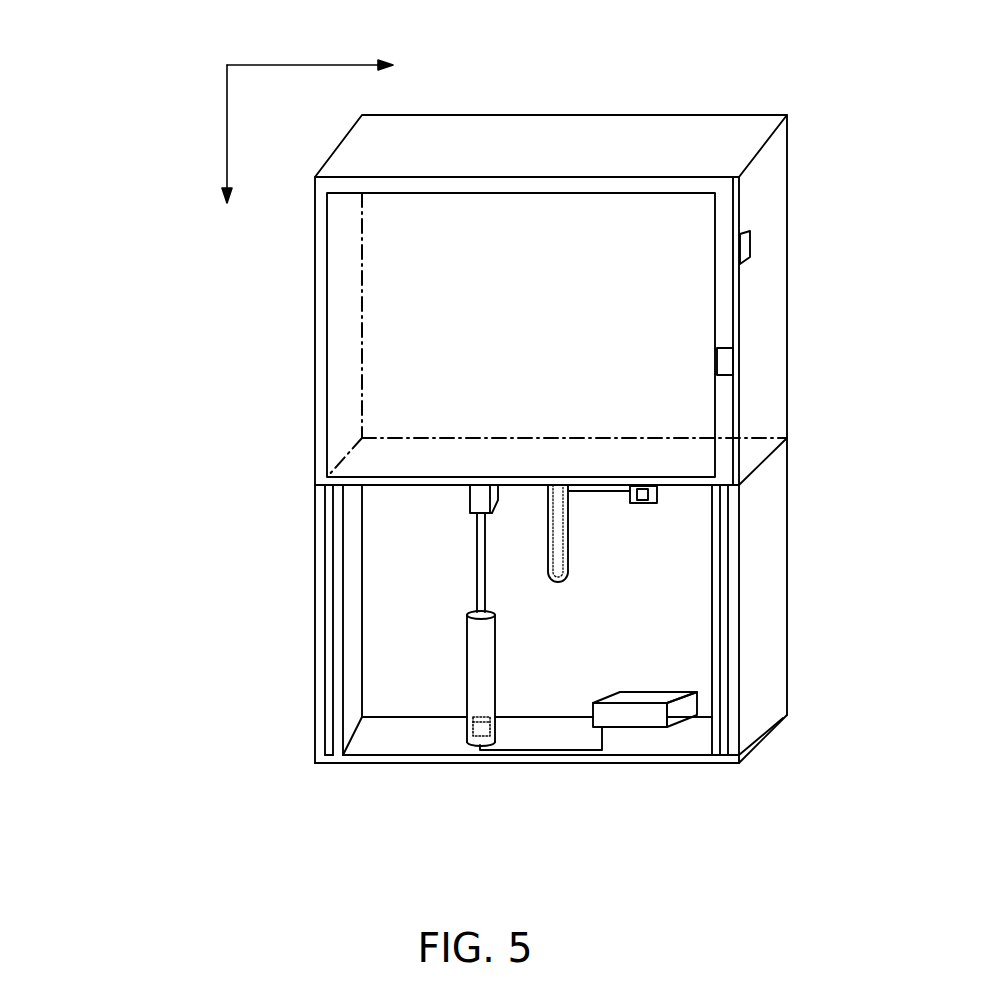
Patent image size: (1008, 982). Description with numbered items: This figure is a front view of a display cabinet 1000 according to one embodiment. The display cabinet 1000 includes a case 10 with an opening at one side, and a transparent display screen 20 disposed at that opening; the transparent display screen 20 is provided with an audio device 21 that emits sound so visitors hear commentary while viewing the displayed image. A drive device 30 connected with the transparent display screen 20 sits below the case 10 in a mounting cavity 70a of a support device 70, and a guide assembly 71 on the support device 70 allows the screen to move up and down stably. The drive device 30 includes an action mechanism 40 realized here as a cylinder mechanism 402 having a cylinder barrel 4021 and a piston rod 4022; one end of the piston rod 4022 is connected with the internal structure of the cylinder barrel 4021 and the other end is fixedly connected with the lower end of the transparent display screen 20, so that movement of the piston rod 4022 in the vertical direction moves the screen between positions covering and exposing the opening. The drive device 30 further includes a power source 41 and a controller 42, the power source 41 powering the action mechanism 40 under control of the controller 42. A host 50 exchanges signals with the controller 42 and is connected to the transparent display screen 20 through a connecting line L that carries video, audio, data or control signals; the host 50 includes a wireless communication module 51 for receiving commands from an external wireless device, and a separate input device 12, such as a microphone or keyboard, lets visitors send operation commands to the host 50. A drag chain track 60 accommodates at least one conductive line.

The display cabinet 1000 is at (130, 48).
The case 10 is at (770, 213).
The input device 12 is at (745, 250).
The transparent display screen 20 is at (740, 317).
The audio device 21 is at (725, 362).
The drive device 30 is at (95, 478).
The action mechanism 40 is at (168, 545).
The power source 41 is at (478, 738).
The controller 42 is at (633, 717).
The cylinder mechanism 402 is at (230, 535).
The cylinder barrel 4021 is at (480, 663).
The piston rod 4022 is at (482, 555).
The host 50 is at (657, 491).
The wireless communication module 51 is at (648, 494).
The drag chain track 60 is at (568, 553).
The support device 70 is at (765, 647).
The mounting cavity 70a is at (385, 678).
The guide assembly 71 is at (725, 715).
The connecting line L is at (600, 491).